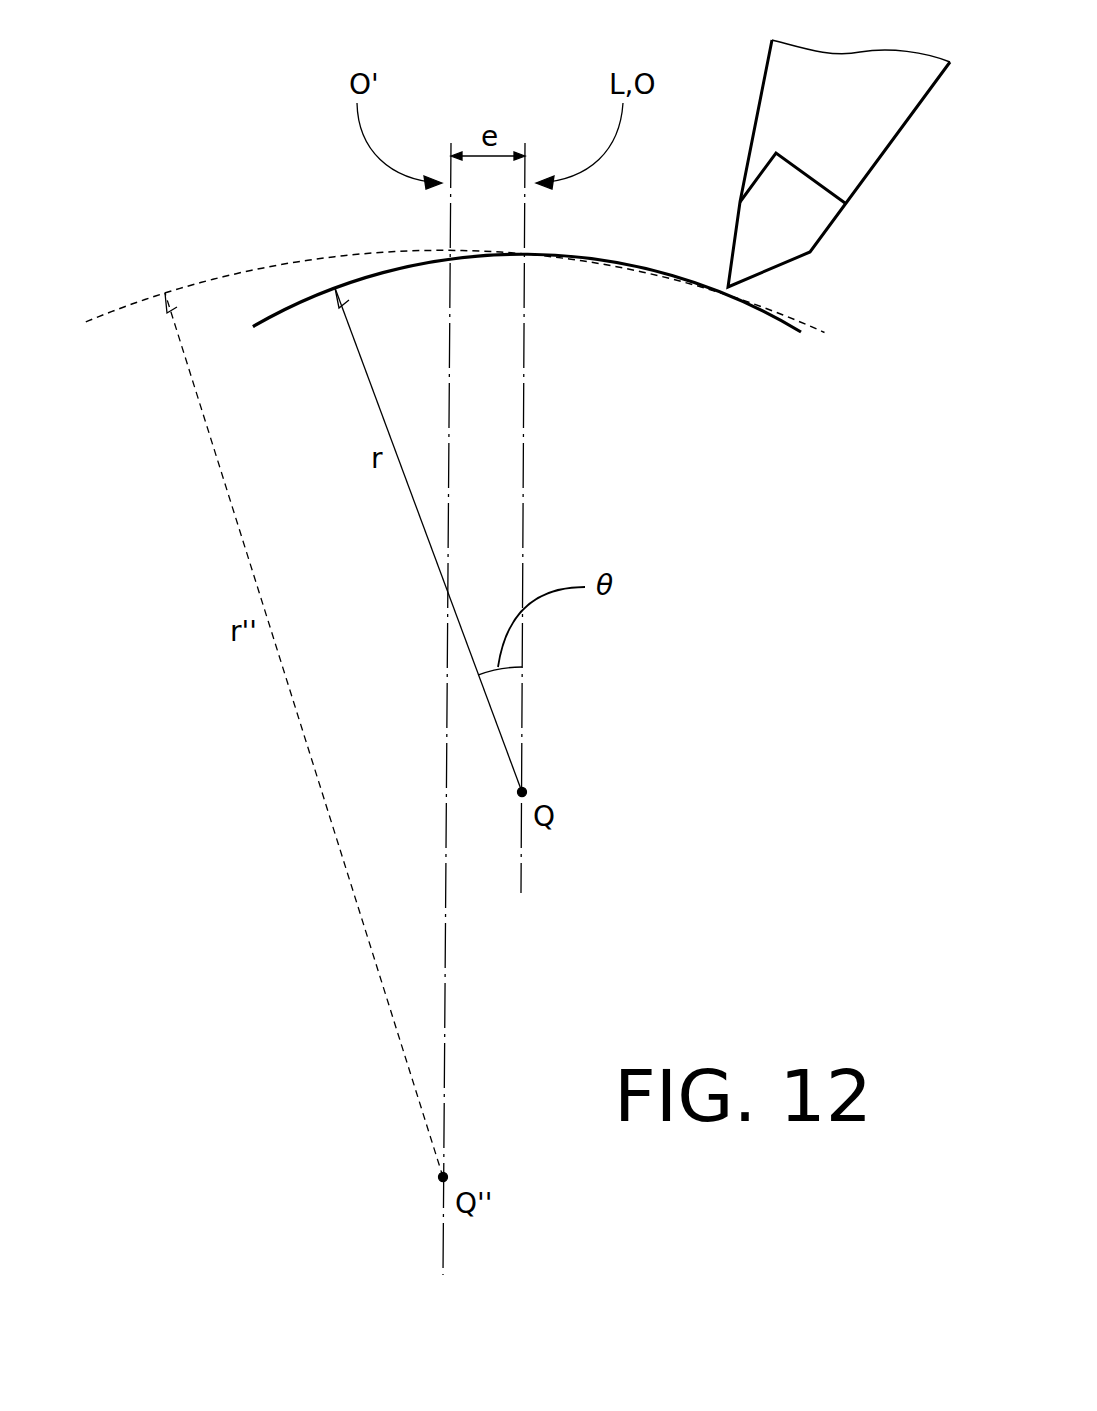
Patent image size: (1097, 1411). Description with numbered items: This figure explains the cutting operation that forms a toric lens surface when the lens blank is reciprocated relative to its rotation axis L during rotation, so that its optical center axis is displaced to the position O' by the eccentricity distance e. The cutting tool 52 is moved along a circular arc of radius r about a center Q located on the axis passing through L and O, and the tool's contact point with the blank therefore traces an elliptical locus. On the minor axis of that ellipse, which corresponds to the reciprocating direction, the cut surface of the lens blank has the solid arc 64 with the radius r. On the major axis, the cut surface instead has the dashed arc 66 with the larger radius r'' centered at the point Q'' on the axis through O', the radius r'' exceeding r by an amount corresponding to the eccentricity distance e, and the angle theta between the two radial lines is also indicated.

The cutting tool 52 is at (813, 232).
The arc 64 is at (370, 270).
The arc 66 is at (233, 268).